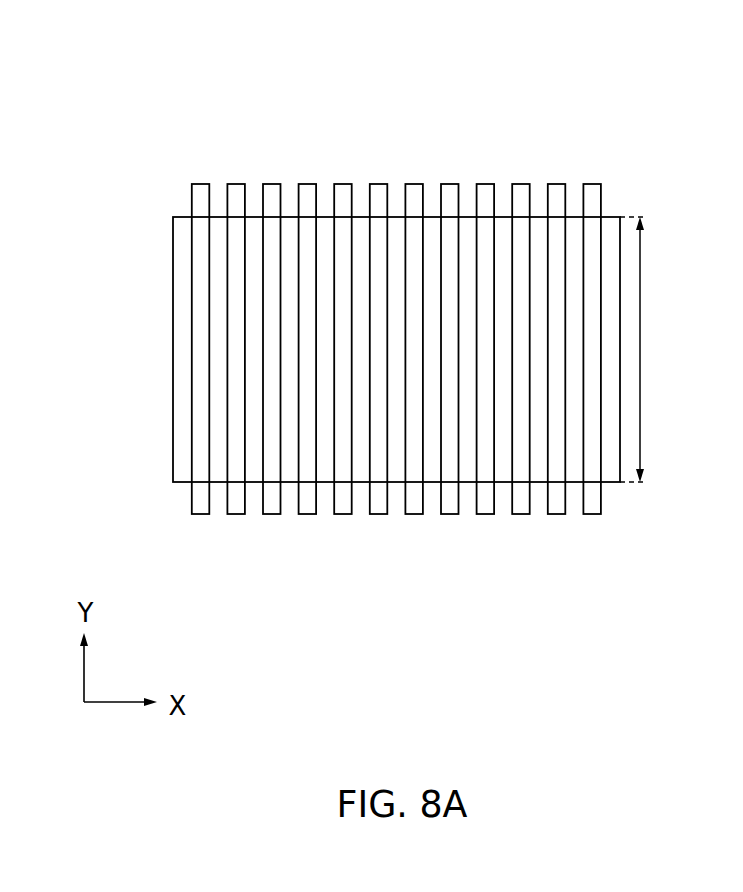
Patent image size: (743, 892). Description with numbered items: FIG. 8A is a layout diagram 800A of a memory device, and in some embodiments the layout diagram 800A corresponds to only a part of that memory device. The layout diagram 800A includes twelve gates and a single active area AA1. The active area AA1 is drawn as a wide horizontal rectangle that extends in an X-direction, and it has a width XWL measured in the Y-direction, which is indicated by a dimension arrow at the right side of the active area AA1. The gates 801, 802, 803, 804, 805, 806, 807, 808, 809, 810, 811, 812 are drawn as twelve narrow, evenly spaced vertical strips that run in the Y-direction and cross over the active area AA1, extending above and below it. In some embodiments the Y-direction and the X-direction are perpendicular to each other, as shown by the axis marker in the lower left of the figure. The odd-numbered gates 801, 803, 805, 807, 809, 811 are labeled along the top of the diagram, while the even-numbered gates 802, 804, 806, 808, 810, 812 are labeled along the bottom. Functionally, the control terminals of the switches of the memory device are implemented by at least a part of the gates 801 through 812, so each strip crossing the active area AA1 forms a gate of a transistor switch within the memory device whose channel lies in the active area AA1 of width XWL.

The layout diagram 800A is at (68, 59).
The active area AA1 is at (173, 348).
The width of the active area XWL is at (666, 349).
The gate 801 is at (200, 184).
The gate 802 is at (236, 514).
The gate 803 is at (271, 184).
The gate 804 is at (307, 514).
The gate 805 is at (342, 184).
The gate 806 is at (379, 514).
The gate 807 is at (413, 184).
The gate 808 is at (450, 514).
The gate 809 is at (484, 184).
The gate 810 is at (521, 514).
The gate 811 is at (556, 184).
The gate 812 is at (592, 514).